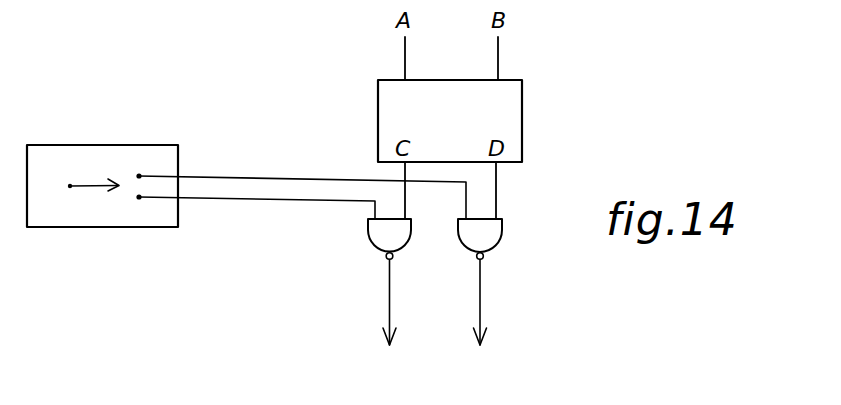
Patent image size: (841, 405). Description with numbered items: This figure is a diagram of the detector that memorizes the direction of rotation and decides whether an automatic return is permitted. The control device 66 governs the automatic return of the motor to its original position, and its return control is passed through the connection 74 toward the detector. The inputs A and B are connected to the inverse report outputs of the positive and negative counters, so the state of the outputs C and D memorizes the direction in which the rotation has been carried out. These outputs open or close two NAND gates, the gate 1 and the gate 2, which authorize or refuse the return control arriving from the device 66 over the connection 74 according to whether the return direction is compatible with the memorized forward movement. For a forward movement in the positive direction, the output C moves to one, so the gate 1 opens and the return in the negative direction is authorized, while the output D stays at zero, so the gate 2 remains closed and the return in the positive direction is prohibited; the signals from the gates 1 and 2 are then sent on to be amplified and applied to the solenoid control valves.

The control device 66 is at (104, 131).
The connection 74 is at (276, 163).
The gate 1 is at (389, 282).
The gate 2 is at (480, 282).